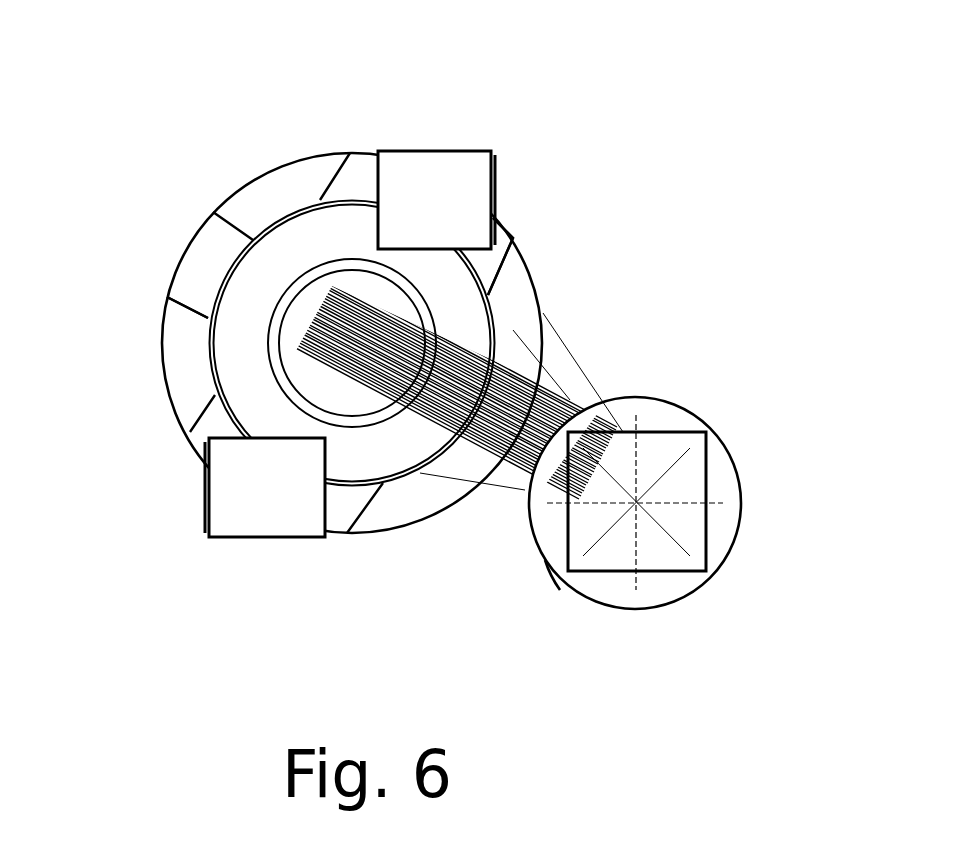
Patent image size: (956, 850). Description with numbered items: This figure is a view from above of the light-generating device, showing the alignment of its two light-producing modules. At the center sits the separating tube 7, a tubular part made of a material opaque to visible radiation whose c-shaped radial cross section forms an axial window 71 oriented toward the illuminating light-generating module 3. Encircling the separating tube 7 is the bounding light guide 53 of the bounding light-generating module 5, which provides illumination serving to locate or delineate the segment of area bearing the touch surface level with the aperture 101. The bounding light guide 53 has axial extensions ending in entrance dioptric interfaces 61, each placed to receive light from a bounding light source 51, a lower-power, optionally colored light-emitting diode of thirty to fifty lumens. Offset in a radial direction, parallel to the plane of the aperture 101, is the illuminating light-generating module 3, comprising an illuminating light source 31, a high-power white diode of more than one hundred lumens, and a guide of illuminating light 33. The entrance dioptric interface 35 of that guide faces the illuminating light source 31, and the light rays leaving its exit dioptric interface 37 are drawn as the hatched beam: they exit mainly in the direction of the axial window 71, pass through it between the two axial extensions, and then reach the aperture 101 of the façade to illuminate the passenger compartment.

The illuminating light-generating module 3 is at (690, 494).
The illuminating light source 31 is at (672, 432).
The guide of illuminating light 33 is at (661, 622).
The entrance dioptric interface 35 is at (550, 534).
The exit dioptric interface 37 is at (571, 400).
The bounding light-generating module 5 is at (323, 290).
The bounding light source 51 is at (445, 150).
The bounding light guide 53 is at (160, 222).
The entrance dioptric interface 61 is at (515, 236).
The separating tube 7 is at (312, 222).
The axial window 71 is at (476, 440).
The aperture 101 is at (356, 404).